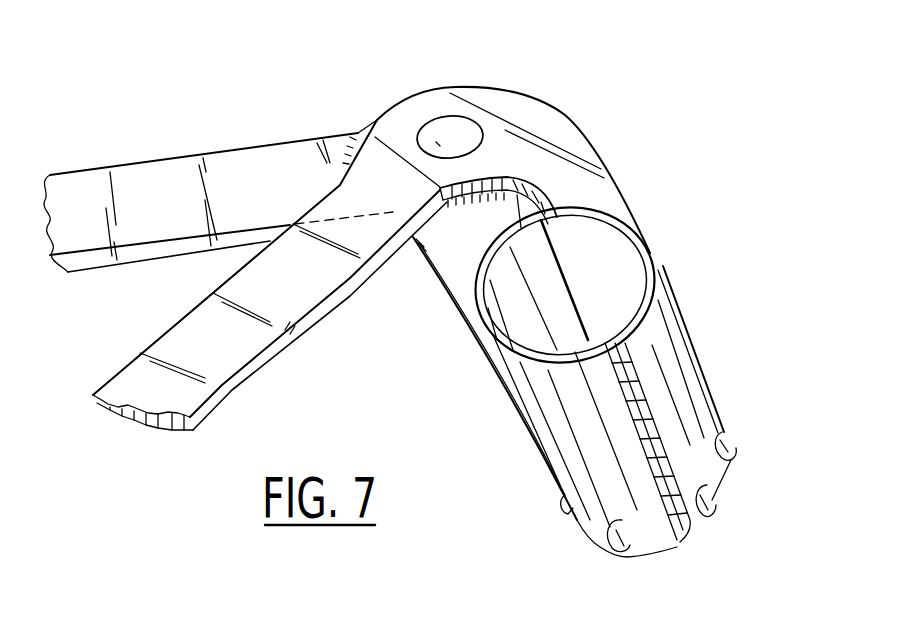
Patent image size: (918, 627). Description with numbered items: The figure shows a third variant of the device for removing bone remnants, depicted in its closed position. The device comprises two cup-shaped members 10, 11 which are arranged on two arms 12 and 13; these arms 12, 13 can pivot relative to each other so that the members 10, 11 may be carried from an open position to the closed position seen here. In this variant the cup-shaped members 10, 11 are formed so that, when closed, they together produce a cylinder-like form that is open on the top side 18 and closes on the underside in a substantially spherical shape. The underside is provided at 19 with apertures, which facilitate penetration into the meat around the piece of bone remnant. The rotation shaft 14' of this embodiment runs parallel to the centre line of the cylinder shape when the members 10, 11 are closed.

The cup-shaped member 10 is at (685, 407).
The cup-shaped member 11 is at (550, 470).
The arm 12 is at (233, 352).
The arm 13 is at (212, 155).
The rotation shaft 14' is at (449, 89).
The top side 18 is at (614, 269).
The apertures 19 is at (733, 463).